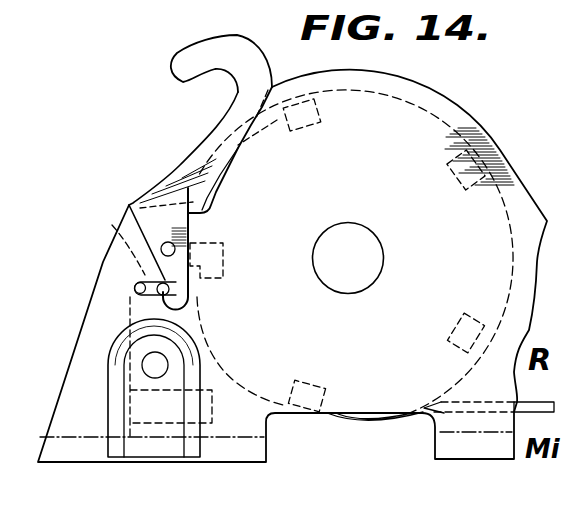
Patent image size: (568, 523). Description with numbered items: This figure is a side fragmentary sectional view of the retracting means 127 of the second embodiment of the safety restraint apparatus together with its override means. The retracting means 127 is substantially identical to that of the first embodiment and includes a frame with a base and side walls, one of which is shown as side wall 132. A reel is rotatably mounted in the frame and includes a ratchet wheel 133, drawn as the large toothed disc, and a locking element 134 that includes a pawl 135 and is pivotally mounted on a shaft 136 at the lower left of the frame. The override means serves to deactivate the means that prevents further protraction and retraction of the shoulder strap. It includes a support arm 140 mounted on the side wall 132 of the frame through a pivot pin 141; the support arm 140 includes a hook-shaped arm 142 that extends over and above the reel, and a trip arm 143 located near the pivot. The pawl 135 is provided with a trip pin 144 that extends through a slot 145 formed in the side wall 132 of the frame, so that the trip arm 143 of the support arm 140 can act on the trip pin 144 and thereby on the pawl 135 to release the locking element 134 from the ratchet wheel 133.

The retracting means 127 is at (506, 108).
The side wall 132 is at (519, 299).
The ratchet wheel 133 is at (362, 98).
The locking element 134 is at (133, 294).
The pawl 135 is at (112, 225).
The shaft 136 is at (150, 363).
The support arm 140 is at (196, 133).
The pivot pin 141 is at (175, 227).
The hook-shaped arm 142 is at (197, 53).
The trip arm 143 is at (178, 263).
The trip pin 144 is at (170, 288).
The slot 145 is at (133, 282).